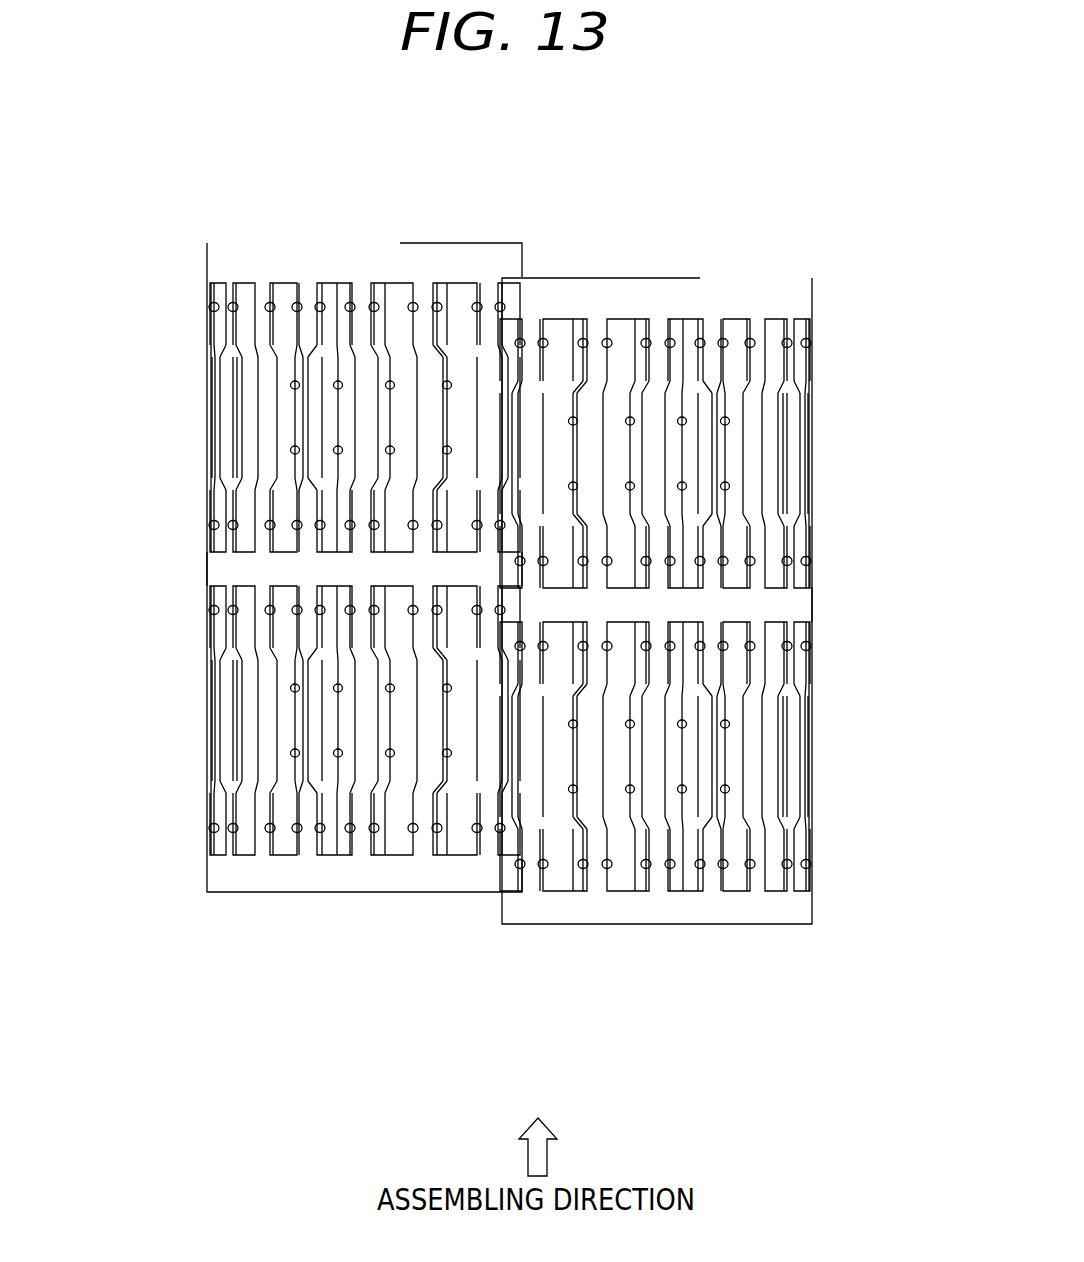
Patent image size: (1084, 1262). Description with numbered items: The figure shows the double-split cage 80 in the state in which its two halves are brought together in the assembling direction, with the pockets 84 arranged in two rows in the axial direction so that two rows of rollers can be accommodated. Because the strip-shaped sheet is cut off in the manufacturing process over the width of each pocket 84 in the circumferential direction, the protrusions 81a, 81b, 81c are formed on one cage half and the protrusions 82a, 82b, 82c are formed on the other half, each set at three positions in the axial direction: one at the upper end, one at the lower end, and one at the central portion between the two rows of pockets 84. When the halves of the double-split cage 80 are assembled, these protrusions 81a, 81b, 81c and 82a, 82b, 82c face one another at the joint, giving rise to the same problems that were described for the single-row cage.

The double-split cage 80 is at (186, 567).
The protrusion 81a is at (498, 292).
The protrusion 81b is at (515, 907).
The protrusion 81c is at (520, 602).
The protrusion 82a is at (512, 262).
The protrusion 82b is at (510, 875).
The protrusion 82c is at (503, 575).
The pocket 84 is at (398, 293).